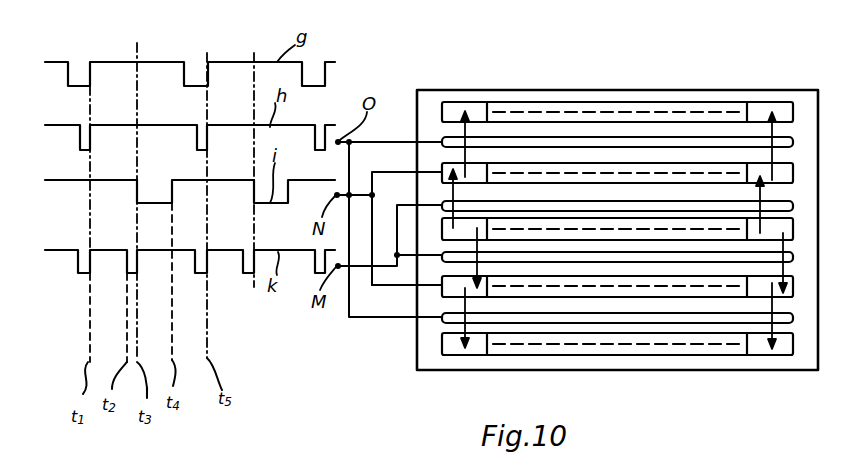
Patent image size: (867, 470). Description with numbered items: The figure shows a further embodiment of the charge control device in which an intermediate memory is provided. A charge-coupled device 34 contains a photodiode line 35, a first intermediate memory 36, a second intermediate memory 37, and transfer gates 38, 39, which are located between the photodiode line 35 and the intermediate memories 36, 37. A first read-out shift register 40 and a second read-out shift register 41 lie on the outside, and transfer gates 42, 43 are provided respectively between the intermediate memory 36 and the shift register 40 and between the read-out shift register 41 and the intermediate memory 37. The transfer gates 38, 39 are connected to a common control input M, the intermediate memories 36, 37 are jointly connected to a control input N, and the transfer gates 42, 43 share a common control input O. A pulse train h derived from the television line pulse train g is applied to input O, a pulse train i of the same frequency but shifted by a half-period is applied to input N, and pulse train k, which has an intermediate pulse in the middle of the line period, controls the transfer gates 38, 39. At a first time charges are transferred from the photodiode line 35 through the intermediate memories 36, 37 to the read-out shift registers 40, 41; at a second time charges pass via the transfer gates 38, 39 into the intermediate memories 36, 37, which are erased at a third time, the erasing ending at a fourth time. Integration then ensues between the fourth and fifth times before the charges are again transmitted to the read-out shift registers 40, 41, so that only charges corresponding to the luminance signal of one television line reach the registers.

The charge-coupled device 34 is at (565, 90).
The photodiode line 35 is at (443, 230).
The first intermediate memory 36 is at (440, 294).
The second intermediate memory 37 is at (443, 163).
The transfer gate 38 is at (442, 258).
The transfer gate 39 is at (443, 205).
The first read-out shift register 40 is at (447, 355).
The second read-out shift register 41 is at (453, 107).
The transfer gate 42 is at (710, 323).
The transfer gate 43 is at (443, 141).